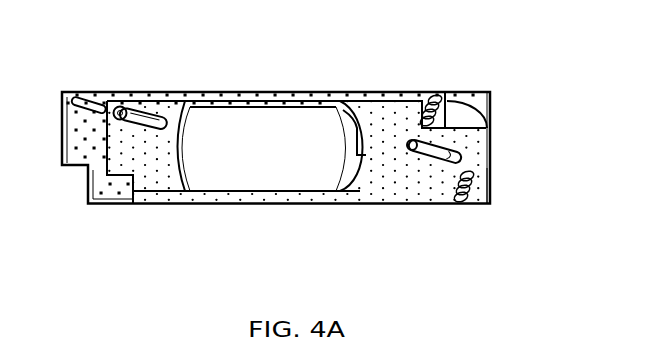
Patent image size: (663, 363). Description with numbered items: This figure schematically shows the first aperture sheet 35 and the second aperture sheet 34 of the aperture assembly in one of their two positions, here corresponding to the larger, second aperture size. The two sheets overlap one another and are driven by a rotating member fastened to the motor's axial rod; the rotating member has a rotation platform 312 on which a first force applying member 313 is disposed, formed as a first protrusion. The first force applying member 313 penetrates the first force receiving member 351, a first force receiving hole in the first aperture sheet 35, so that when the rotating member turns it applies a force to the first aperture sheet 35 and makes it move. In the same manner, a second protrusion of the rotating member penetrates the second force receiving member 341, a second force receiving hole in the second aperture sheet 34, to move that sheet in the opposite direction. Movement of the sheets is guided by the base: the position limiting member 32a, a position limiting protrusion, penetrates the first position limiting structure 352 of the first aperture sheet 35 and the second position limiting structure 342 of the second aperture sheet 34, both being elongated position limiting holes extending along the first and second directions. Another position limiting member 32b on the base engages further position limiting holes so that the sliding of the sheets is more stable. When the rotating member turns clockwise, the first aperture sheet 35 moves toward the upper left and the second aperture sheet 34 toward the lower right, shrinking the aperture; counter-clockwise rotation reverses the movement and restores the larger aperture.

The second aperture sheet 34 is at (278, 105).
The first aperture sheet 35 is at (377, 105).
The position limiting member 32a is at (120, 106).
The position limiting member 32b is at (412, 150).
The rotation platform 312 is at (426, 97).
The first force applying member 313 is at (473, 185).
The second force receiving member 341 is at (437, 97).
The second position limiting structure 342 is at (93, 97).
The first force receiving member 351 is at (462, 200).
The first position limiting structure 352 is at (148, 104).